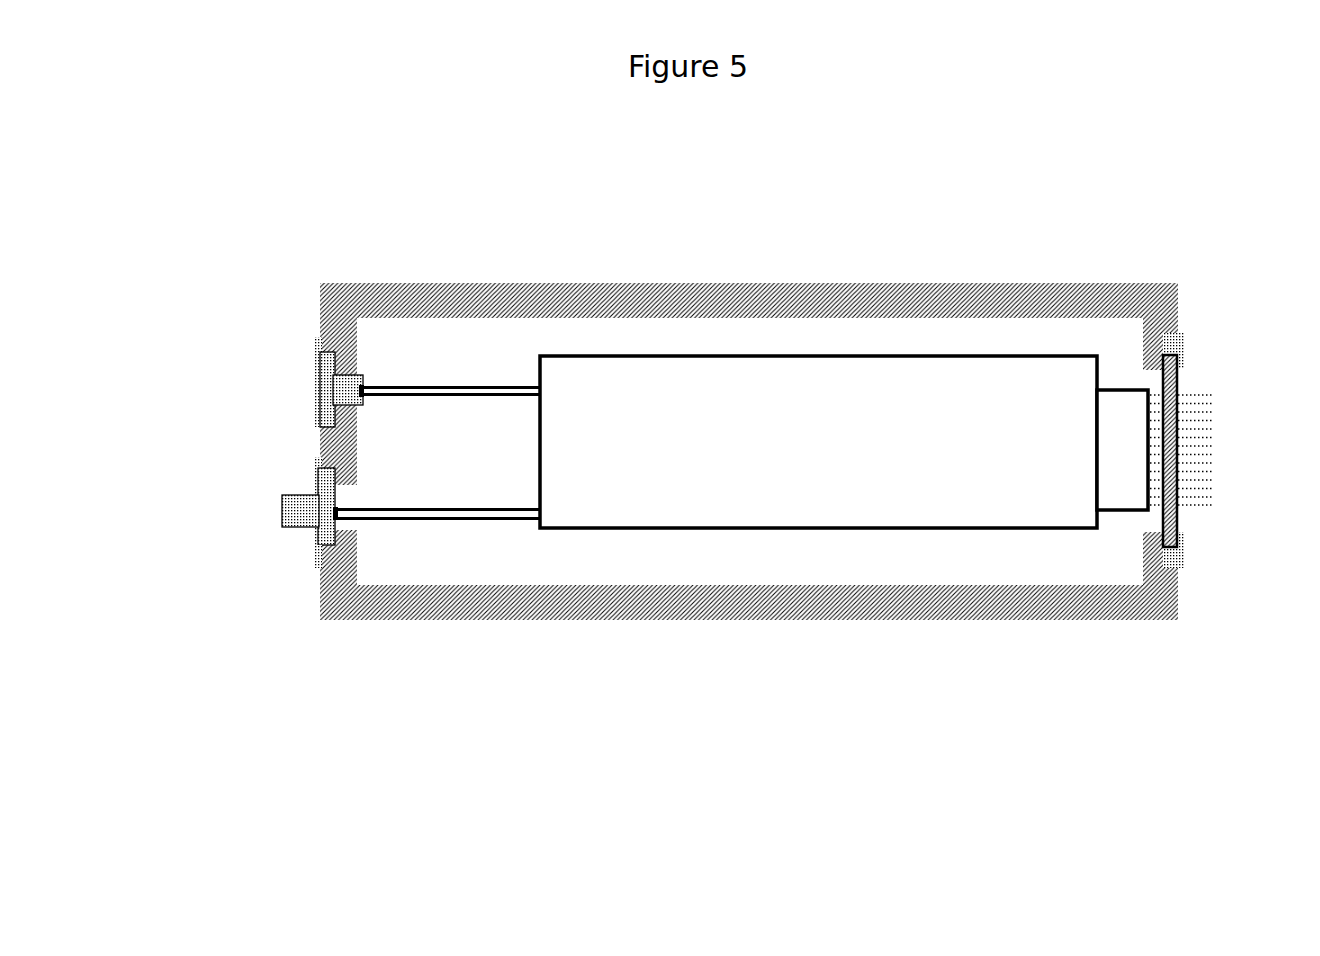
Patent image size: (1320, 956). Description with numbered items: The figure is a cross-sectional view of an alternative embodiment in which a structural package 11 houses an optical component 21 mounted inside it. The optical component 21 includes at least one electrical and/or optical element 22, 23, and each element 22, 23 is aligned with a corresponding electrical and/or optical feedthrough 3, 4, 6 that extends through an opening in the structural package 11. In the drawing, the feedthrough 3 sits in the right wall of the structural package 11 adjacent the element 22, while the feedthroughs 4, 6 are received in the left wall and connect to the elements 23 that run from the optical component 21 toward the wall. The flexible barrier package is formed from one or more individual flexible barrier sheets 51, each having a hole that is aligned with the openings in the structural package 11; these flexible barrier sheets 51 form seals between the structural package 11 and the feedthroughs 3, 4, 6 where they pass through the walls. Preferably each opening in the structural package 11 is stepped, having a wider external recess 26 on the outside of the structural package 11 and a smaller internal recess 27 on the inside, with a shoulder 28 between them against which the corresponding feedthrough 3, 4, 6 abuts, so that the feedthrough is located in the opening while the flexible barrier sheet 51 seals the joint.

The structural package 11 is at (815, 272).
The optical component 21 is at (890, 425).
The electrical and optical element 22 is at (1142, 464).
The feedthrough 3 is at (1174, 388).
The feedthrough 4 is at (319, 395).
The feedthrough 6 is at (282, 520).
The electrical and optical element 23 is at (427, 383).
The wider external recess 26 is at (326, 545).
The smaller internal recess 27 is at (343, 493).
The shoulder 28 is at (358, 543).
The flexible barrier sheet 51 is at (317, 346).